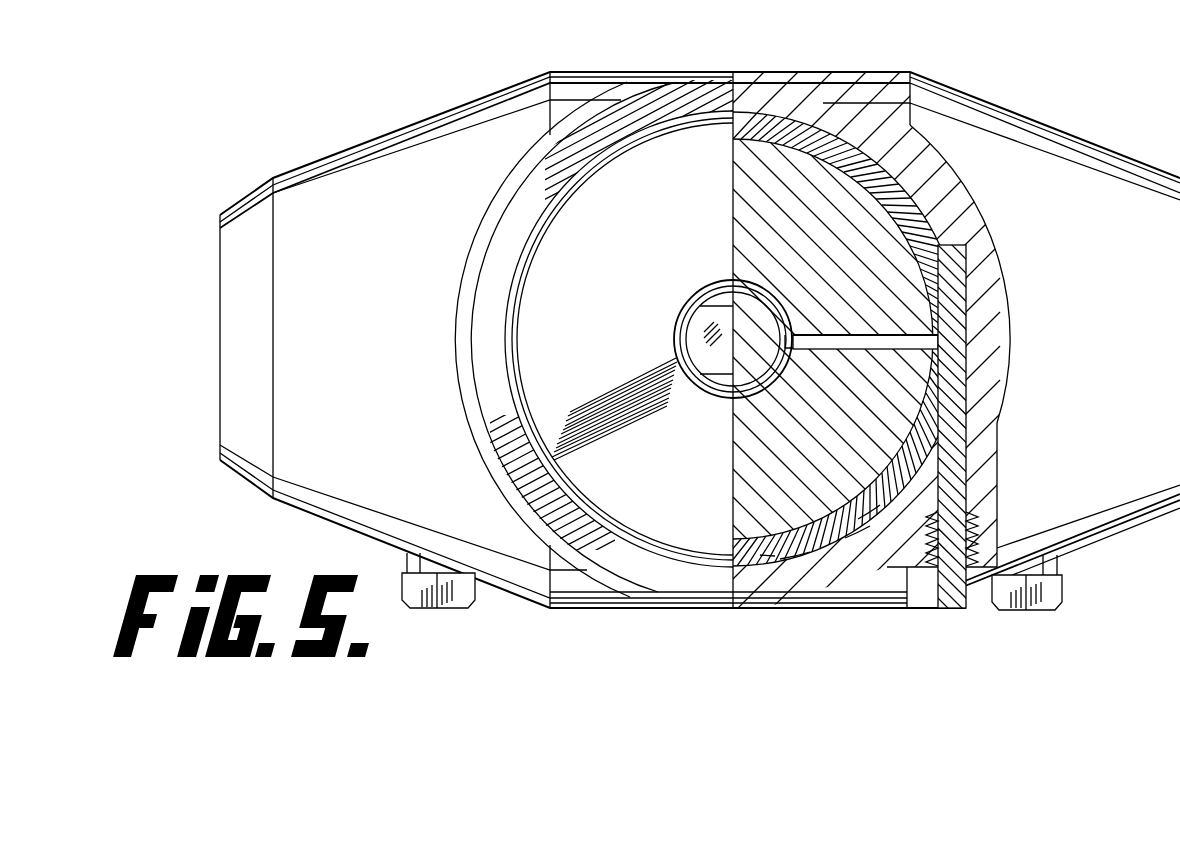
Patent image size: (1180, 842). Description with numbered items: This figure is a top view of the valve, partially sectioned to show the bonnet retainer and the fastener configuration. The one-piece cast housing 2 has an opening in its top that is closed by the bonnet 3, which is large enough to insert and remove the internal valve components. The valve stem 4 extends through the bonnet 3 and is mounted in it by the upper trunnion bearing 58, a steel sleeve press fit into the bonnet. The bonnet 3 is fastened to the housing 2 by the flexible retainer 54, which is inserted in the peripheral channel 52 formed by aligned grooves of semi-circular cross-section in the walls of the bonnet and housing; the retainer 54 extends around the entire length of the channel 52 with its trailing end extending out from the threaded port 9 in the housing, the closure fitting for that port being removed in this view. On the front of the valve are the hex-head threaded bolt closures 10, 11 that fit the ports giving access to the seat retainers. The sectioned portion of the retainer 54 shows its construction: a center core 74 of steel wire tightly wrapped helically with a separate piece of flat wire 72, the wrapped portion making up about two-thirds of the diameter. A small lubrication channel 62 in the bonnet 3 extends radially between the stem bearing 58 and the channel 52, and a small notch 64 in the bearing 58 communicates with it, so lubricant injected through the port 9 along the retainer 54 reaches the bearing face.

The housing 2 is at (1040, 160).
The bonnet 3 is at (852, 225).
The valve stem 4 is at (707, 340).
The port 9 is at (978, 547).
The bolt closure 10 is at (1064, 590).
The bolt closure 11 is at (453, 608).
The peripheral channel 52 is at (928, 428).
The flexible retainer 54 is at (802, 143).
The upper trunnion bearing 58 is at (765, 400).
The lubrication channel 62 is at (890, 340).
The notch 64 is at (795, 480).
The flat wire 72 is at (857, 533).
The center core 74 is at (868, 513).